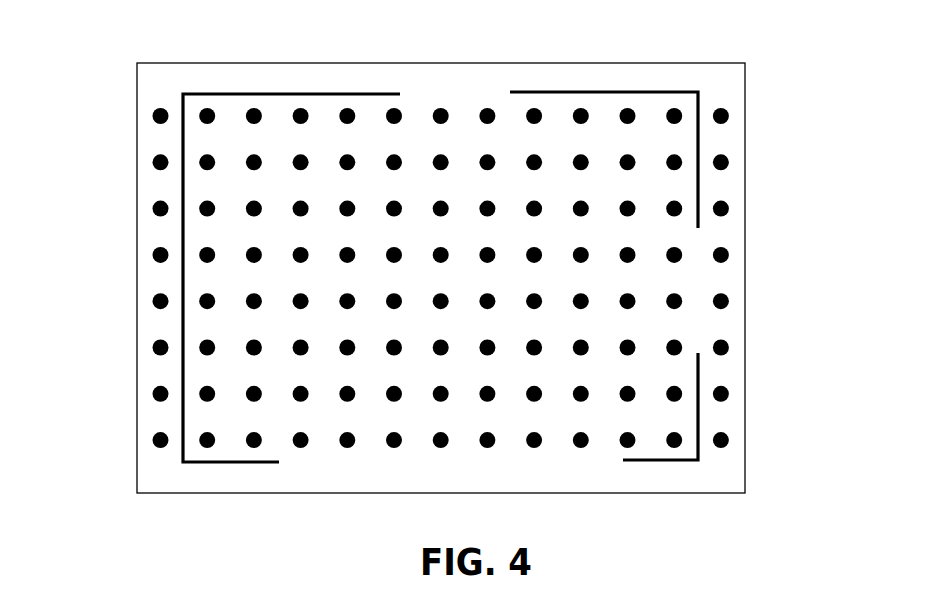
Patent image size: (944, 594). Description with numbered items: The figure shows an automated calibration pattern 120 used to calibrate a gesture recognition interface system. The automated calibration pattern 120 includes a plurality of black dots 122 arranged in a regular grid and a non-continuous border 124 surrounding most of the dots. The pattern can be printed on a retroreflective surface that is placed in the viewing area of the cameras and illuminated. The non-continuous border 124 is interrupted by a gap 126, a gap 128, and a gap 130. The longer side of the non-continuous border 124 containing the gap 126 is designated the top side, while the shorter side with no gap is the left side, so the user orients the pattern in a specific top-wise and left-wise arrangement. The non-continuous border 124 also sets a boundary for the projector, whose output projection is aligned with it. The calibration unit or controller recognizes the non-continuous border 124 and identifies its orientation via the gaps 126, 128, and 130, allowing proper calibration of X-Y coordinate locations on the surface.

The automated calibration pattern 120 is at (96, 71).
The black dots 122 is at (385, 457).
The non-continuous border 124 is at (183, 308).
The gap 126 is at (476, 88).
The gap 128 is at (704, 286).
The gap 130 is at (511, 466).